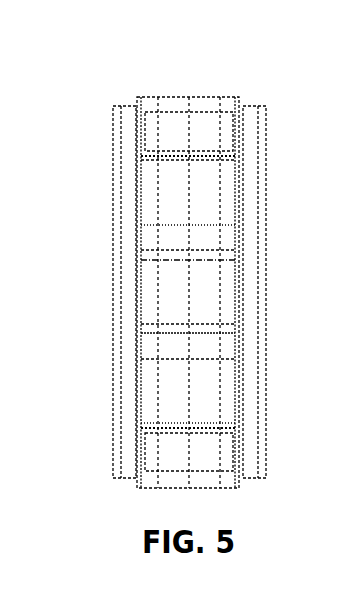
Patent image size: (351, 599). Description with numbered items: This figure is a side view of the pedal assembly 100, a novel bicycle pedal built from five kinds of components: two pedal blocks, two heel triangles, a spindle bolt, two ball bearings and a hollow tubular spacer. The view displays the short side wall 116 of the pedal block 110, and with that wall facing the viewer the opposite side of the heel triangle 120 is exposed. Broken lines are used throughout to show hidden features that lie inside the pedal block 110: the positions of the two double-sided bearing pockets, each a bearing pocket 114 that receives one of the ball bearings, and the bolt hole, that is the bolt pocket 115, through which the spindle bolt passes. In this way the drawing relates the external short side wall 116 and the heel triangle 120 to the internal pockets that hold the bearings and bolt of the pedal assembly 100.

The pedal assembly 100 is at (156, 269).
The pedal block 110 is at (165, 97).
The bearing pocket 114 is at (189, 291).
The bolt pocket 115 is at (188, 292).
The short side wall 116 is at (9, 234).
The heel triangle 120 is at (113, 183).